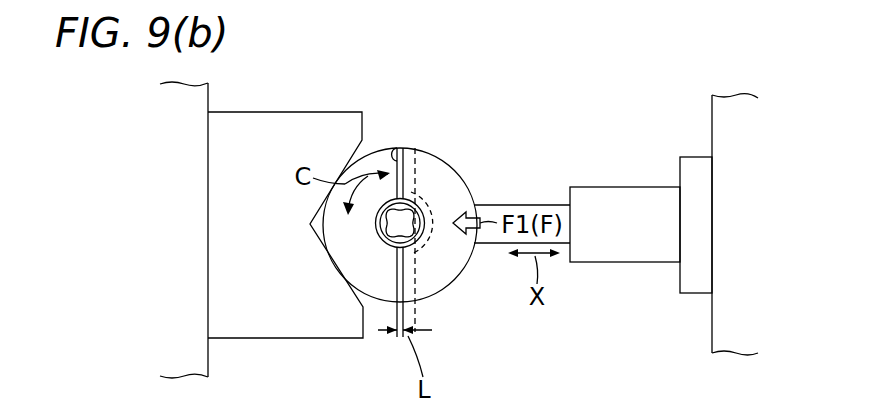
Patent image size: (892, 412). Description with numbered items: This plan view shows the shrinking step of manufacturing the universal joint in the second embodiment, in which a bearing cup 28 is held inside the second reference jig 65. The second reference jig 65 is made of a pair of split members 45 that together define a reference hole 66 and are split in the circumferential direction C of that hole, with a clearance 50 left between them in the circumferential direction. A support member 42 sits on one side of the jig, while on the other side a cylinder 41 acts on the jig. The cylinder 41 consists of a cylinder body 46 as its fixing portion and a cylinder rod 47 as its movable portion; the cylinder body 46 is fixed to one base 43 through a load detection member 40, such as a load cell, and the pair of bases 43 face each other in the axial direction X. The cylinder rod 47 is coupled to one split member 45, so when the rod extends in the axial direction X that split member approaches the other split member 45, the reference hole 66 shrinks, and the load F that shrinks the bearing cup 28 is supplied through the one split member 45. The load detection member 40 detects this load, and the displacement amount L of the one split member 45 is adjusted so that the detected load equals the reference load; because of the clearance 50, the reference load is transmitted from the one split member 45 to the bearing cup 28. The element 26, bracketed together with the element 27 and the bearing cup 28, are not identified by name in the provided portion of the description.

The shaft portion 26 is at (392, 380).
The first shaft member 27 is at (376, 226).
The bearing cup 28 is at (396, 248).
The load detection member 40 is at (692, 157).
The cylinder 41 is at (629, 133).
The support member 42 is at (313, 111).
The base 43 is at (208, 96).
The split member 45 is at (375, 148).
The cylinder body 46 is at (612, 187).
The cylinder rod 47 is at (548, 205).
The clearance 50 is at (400, 148).
The second reference jig 65 is at (460, 163).
The reference hole 66 is at (432, 213).